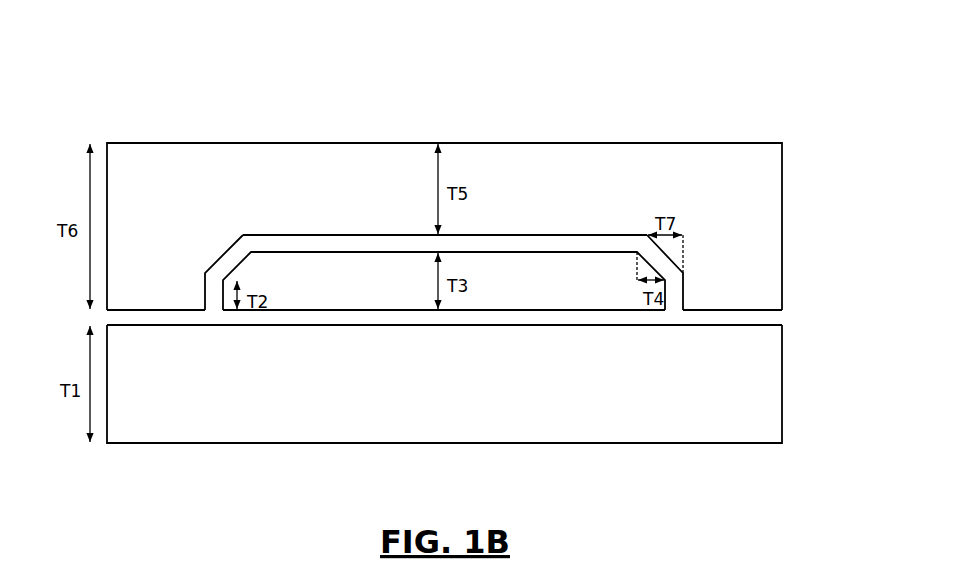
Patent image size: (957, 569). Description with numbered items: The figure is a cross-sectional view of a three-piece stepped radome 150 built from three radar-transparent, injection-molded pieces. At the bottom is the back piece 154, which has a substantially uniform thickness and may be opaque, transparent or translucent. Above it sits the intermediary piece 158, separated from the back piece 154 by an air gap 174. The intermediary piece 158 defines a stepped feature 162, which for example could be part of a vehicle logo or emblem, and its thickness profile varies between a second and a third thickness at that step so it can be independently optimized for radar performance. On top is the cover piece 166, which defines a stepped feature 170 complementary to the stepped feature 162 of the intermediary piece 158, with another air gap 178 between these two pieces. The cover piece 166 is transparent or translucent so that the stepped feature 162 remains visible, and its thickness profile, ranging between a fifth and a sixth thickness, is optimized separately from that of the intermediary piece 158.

The three-piece radome 150 is at (183, 77).
The back piece 154 is at (782, 392).
The intermediary piece 158 is at (553, 311).
The stepped feature 162 is at (253, 263).
The cover piece 166 is at (782, 222).
The stepped feature 170 is at (207, 237).
The air gap 174 is at (773, 317).
The air gap 178 is at (543, 247).